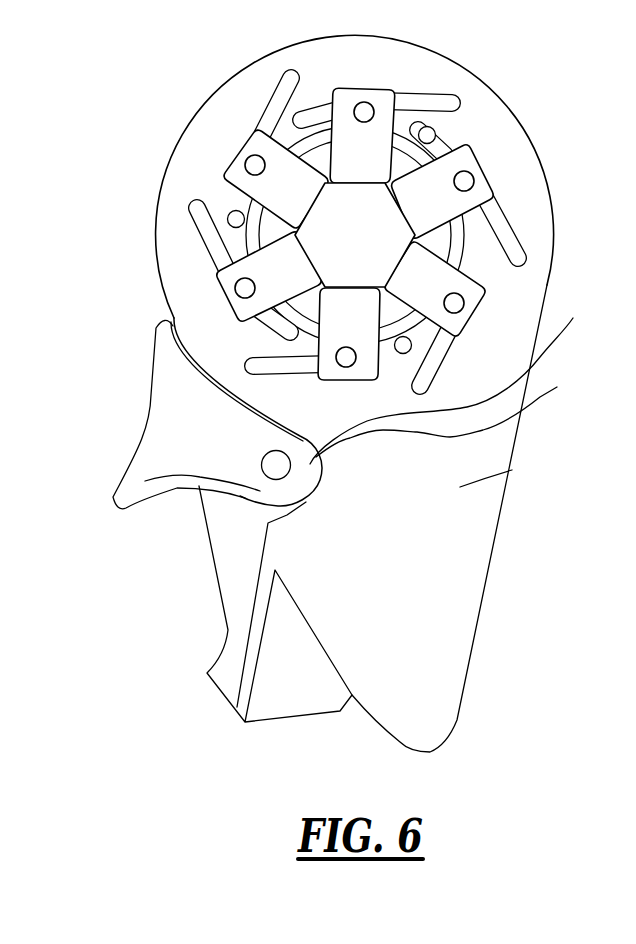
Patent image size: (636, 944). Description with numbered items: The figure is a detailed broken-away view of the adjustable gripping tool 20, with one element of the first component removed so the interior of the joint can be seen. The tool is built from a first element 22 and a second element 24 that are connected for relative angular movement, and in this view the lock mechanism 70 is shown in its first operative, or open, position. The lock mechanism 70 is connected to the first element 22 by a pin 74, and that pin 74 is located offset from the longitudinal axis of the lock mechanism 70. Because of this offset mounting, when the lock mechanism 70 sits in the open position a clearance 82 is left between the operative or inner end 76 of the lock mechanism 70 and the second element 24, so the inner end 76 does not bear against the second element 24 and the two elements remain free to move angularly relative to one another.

The adjustable gripping tool 20 is at (534, 56).
The first element 22 is at (235, 568).
The second element 24 is at (510, 471).
The lock mechanism 70 is at (128, 416).
The pin 74 is at (271, 474).
The inner end 76 is at (451, 414).
The clearance 82 is at (457, 376).